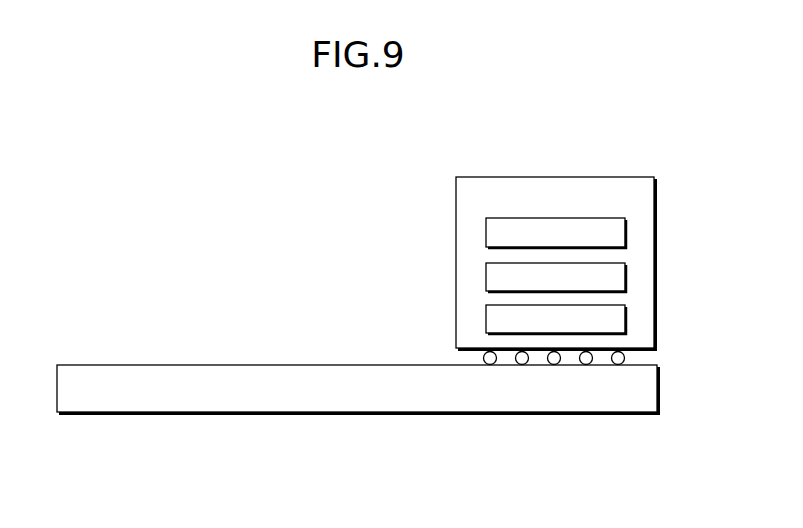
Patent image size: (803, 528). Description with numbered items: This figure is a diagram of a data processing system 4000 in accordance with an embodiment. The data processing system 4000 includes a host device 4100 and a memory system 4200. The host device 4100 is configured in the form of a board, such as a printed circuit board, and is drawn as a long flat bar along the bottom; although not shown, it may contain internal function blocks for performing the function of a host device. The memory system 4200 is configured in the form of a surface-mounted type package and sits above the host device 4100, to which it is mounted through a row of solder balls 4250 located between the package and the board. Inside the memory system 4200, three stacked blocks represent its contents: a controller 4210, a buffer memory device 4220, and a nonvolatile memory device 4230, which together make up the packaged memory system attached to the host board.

The data processing system 4000 is at (135, 149).
The host device 4100 is at (358, 389).
The memory system 4200 is at (556, 263).
The controller 4210 is at (556, 233).
The buffer memory device 4220 is at (556, 277).
The nonvolatile memory device 4230 is at (556, 319).
The solder balls 4250 is at (637, 358).